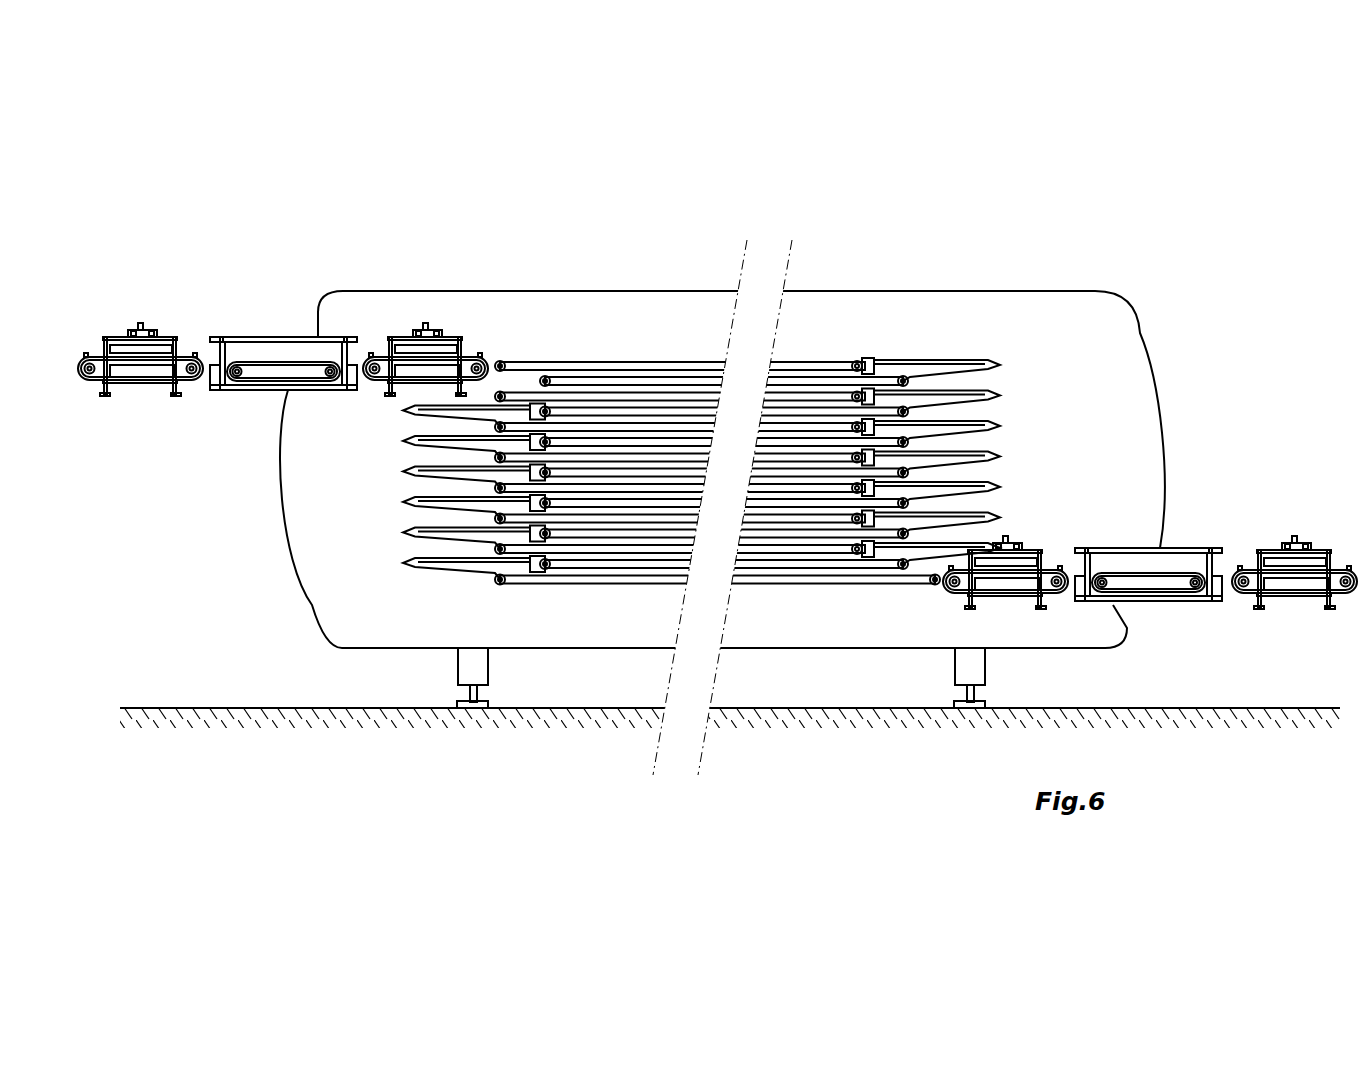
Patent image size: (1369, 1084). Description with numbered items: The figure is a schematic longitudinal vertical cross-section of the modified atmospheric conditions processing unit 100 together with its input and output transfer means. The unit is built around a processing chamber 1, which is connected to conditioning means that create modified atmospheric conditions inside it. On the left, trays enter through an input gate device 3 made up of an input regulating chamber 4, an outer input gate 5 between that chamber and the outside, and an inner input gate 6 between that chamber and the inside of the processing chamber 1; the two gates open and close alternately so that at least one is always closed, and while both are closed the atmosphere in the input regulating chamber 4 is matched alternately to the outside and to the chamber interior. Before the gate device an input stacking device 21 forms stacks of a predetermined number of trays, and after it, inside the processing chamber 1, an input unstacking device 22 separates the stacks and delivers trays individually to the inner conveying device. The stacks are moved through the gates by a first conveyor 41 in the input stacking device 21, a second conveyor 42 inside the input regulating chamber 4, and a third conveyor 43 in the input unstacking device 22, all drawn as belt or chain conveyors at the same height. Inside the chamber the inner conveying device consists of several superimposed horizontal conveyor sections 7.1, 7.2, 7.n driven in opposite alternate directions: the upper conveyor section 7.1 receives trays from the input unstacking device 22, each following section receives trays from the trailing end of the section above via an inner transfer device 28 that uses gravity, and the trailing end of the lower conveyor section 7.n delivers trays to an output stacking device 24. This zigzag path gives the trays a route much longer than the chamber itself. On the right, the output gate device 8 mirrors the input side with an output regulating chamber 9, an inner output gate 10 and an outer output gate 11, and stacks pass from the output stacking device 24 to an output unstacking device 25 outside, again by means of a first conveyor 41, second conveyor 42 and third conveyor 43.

The modified atmospheric conditions processing unit 100 is at (730, 487).
The processing chamber 1 is at (668, 305).
The input gate device 3 is at (301, 347).
The input regulating chamber 4 is at (280, 336).
The outer input gate 5 is at (212, 355).
The inner input gate 6 is at (375, 312).
The upper conveyor section 7.1 is at (562, 358).
The conveyor section 7.2 is at (652, 375).
The lower conveyor section 7.n is at (808, 575).
The output gate device 8 is at (1154, 572).
The output regulating chamber 9 is at (1148, 540).
The inner output gate 10 is at (1066, 543).
The outer output gate 11 is at (1236, 551).
The input stacking device 21 is at (136, 344).
The input unstacking device 22 is at (432, 346).
The output stacking device 24 is at (1020, 625).
The output unstacking device 25 is at (1297, 520).
The inner transfer device 28 is at (675, 469).
The first conveyor 41 is at (128, 375).
The second conveyor 42 is at (283, 337).
The third conveyor 43 is at (420, 370).